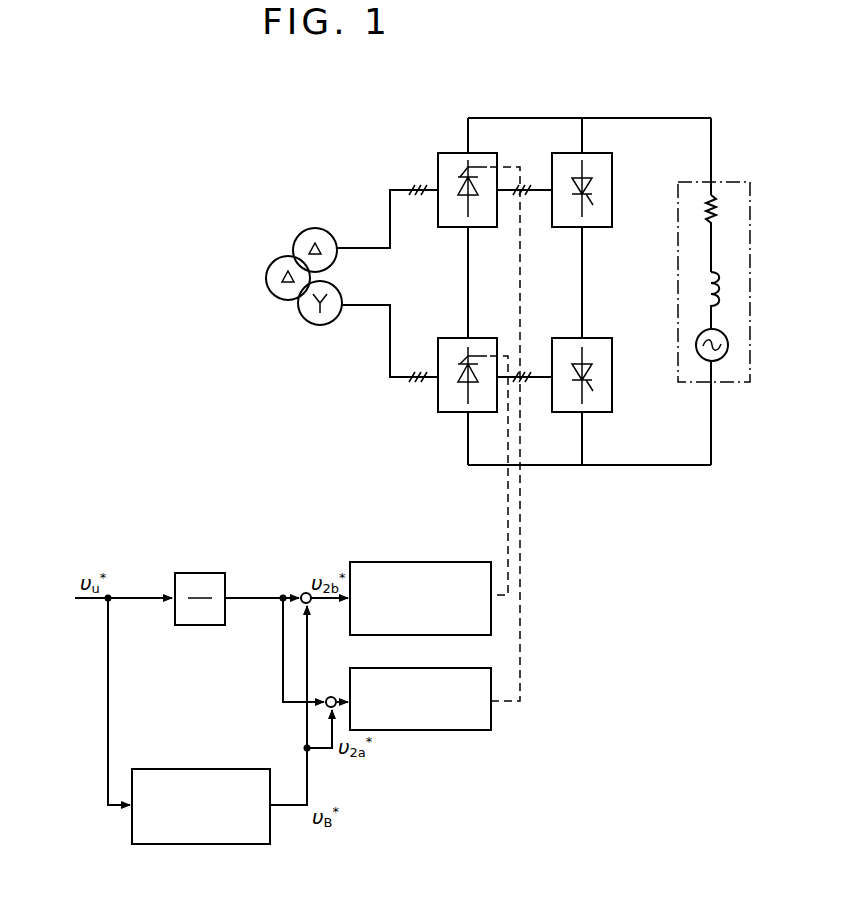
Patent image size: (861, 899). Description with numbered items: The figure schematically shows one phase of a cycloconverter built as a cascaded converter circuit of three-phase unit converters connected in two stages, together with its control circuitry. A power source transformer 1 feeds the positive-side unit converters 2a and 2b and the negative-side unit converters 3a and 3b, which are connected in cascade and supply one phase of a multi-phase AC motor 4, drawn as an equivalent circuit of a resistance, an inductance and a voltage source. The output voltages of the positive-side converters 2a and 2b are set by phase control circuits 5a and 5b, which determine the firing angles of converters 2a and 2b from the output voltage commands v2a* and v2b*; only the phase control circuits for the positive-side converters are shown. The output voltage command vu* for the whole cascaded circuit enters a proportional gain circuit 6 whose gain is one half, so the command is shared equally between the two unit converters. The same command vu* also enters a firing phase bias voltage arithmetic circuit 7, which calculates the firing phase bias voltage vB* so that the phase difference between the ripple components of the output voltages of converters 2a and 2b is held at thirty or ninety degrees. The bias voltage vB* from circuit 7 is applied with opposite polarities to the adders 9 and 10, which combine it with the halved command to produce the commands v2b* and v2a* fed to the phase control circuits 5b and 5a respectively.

The power source transformer 1 is at (277, 258).
The positive-side unit converter 2a is at (438, 172).
The positive-side unit converter 2b is at (453, 338).
The negative-side unit converter 3a is at (612, 172).
The negative-side unit converter 3b is at (612, 359).
The AC motor 4 is at (728, 182).
The phase control circuit 5a is at (407, 730).
The phase control circuit 5b is at (392, 562).
The proportional gain circuit 6 is at (198, 573).
The firing phase bias voltage arithmetic circuit 7 is at (192, 769).
The adder 9 is at (303, 592).
The adder 10 is at (330, 696).